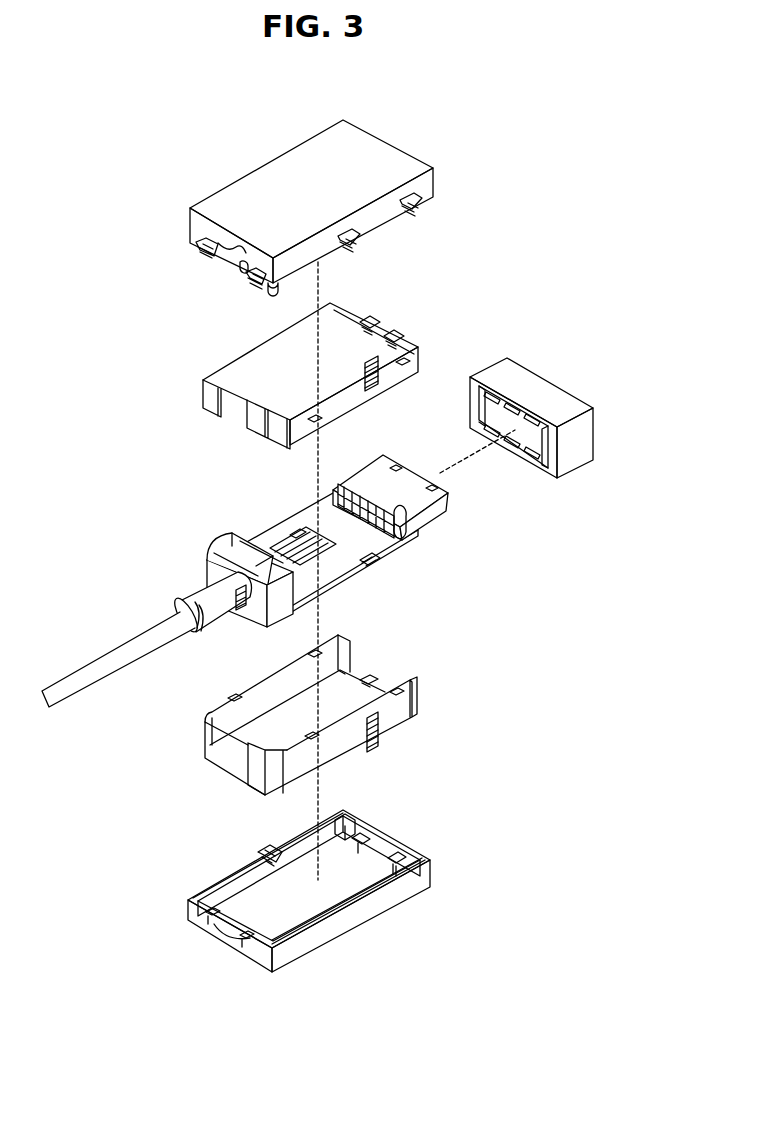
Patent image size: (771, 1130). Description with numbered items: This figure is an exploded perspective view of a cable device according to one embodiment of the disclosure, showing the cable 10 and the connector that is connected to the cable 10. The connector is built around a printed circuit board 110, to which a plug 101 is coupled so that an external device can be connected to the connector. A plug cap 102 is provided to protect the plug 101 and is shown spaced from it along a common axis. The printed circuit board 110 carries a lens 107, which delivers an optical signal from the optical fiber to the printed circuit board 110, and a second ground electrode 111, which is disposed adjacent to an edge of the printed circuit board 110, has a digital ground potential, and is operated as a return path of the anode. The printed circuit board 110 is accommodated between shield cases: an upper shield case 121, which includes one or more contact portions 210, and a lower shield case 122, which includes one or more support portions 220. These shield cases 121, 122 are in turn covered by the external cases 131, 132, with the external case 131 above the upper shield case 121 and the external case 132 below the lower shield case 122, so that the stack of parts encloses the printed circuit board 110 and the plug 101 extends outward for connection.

The cable 10 is at (105, 647).
The plug 101 is at (373, 480).
The plug cap 102 is at (541, 391).
The lens 107 is at (328, 551).
The printed circuit board 110 is at (307, 520).
The second ground electrode 111 is at (389, 554).
The upper shield case 121 is at (325, 376).
The lower shield case 122 is at (331, 715).
The external case 131 is at (274, 171).
The external case 132 is at (413, 888).
The contact portion 210 is at (382, 378).
The support portion 220 is at (377, 734).